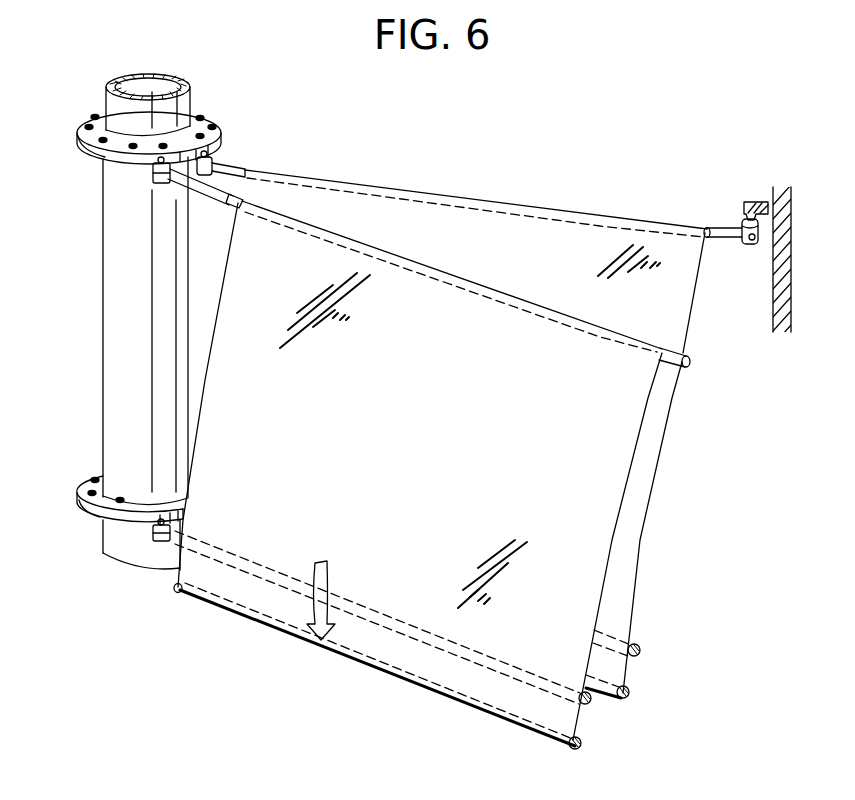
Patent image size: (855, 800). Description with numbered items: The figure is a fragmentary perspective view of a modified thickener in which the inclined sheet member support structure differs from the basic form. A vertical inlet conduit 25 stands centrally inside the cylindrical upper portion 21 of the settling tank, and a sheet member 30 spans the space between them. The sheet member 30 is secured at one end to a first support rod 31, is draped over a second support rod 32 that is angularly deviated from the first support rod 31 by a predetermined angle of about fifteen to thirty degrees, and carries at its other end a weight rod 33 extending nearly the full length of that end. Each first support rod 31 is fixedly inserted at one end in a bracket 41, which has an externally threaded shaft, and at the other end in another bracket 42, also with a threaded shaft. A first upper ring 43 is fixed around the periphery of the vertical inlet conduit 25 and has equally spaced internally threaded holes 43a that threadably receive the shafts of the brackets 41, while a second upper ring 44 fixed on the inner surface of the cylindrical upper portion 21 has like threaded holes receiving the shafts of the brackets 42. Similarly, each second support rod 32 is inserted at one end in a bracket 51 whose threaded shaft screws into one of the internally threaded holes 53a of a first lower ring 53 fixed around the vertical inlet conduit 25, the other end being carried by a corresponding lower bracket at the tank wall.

The cylindrical upper portion 21 is at (791, 272).
The vertical inlet conduit 25 is at (108, 322).
The sheet member 30 is at (617, 566).
The first support rod 31 is at (255, 171).
The second support rod 32 is at (168, 542).
The weight rod 33 is at (630, 692).
The bracket 41 is at (154, 182).
The bracket 42 is at (746, 245).
The first upper ring 43 is at (218, 126).
The internally threaded holes 43a is at (92, 149).
The second upper ring 44 is at (752, 202).
The bracket 51 is at (152, 537).
The first lower ring 53 is at (78, 495).
The internally threaded holes 53a is at (93, 476).